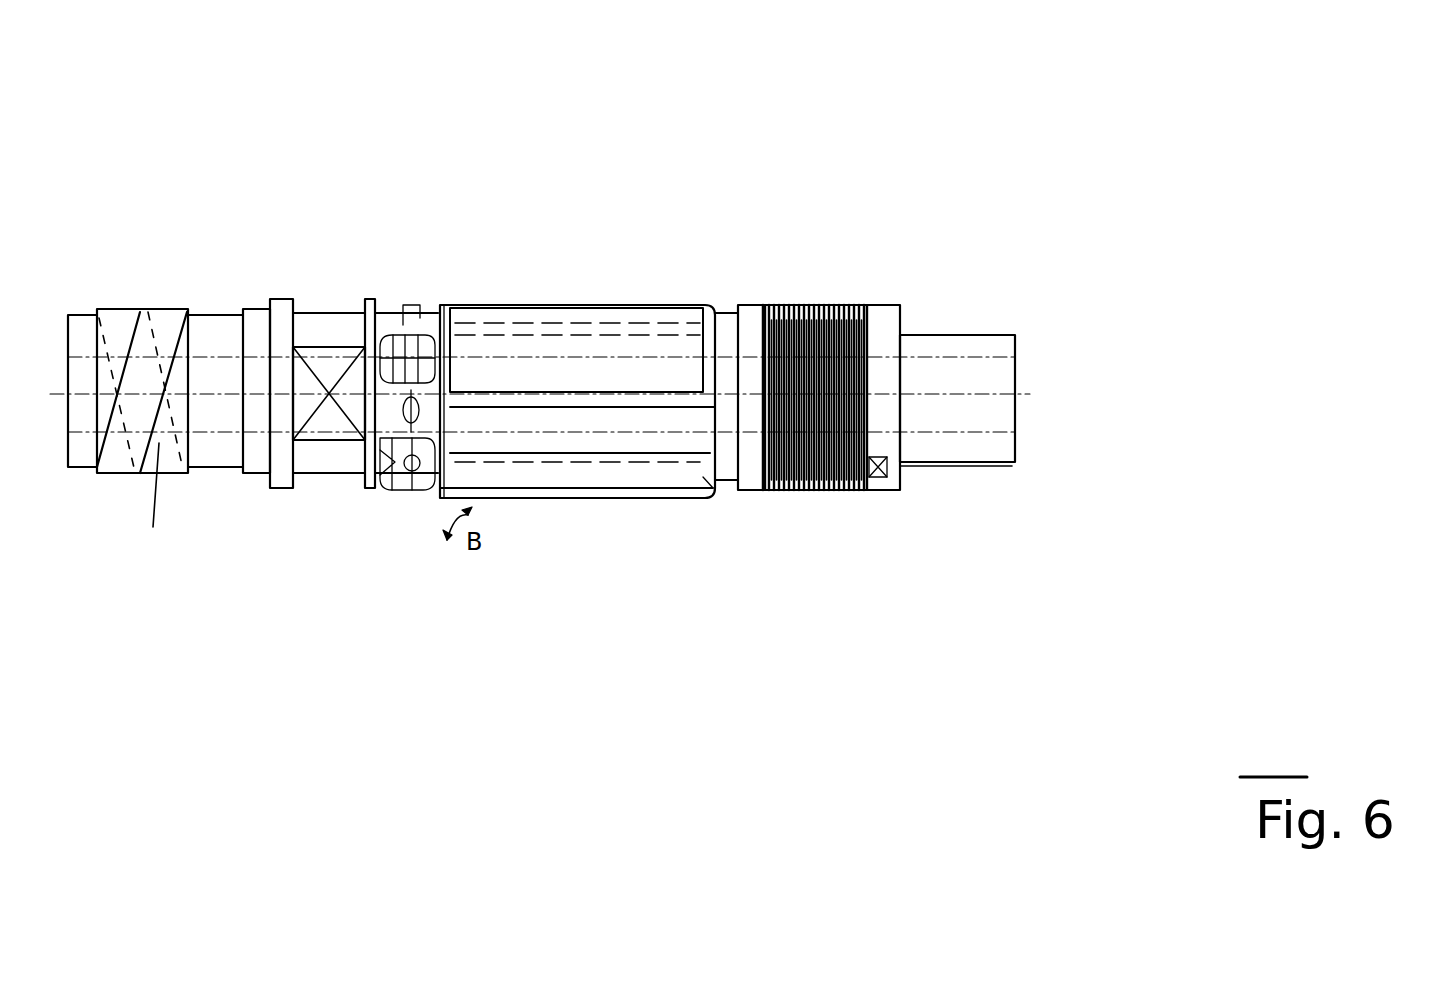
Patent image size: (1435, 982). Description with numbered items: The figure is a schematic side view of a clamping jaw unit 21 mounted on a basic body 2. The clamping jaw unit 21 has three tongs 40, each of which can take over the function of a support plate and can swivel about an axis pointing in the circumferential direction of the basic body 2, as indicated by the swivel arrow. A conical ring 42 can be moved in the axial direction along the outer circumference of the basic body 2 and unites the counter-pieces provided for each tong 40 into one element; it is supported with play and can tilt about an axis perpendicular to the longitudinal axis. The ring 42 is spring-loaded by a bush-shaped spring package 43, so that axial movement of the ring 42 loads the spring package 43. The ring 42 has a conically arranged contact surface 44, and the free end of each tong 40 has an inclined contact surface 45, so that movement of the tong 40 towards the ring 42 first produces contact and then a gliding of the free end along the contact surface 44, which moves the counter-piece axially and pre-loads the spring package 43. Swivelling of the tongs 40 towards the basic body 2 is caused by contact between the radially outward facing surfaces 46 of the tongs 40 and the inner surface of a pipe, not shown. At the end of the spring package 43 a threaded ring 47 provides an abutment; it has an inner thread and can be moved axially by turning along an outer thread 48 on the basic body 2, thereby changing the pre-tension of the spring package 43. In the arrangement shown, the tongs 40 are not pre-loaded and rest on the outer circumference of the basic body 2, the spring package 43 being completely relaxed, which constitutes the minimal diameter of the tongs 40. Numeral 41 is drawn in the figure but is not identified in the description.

The clamping jaw unit 21 is at (635, 217).
The basic body 2 is at (965, 357).
The tong 40 is at (677, 310).
The clip 41 is at (413, 350).
The conical ring 42 is at (753, 310).
The spring package 43 is at (823, 503).
The contact surface 44 is at (727, 480).
The inclined contact surface 45 is at (715, 485).
The radially outward facing surface 46 is at (573, 350).
The threaded ring 47 is at (885, 318).
The outer thread 48 is at (942, 462).